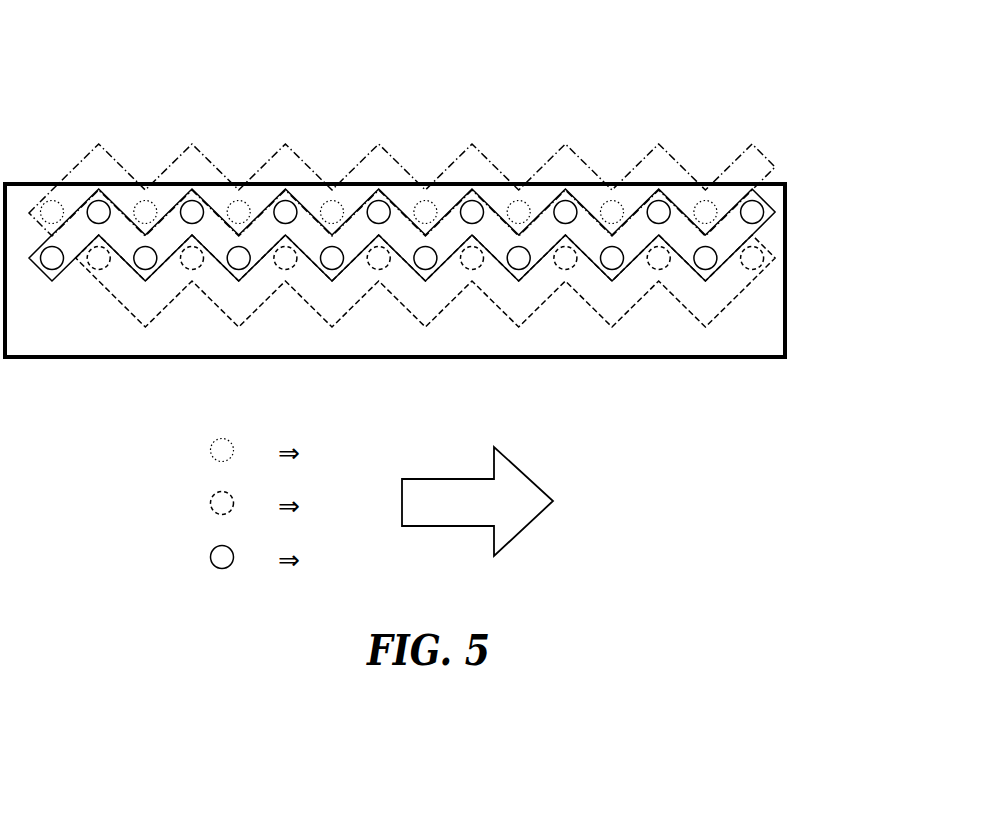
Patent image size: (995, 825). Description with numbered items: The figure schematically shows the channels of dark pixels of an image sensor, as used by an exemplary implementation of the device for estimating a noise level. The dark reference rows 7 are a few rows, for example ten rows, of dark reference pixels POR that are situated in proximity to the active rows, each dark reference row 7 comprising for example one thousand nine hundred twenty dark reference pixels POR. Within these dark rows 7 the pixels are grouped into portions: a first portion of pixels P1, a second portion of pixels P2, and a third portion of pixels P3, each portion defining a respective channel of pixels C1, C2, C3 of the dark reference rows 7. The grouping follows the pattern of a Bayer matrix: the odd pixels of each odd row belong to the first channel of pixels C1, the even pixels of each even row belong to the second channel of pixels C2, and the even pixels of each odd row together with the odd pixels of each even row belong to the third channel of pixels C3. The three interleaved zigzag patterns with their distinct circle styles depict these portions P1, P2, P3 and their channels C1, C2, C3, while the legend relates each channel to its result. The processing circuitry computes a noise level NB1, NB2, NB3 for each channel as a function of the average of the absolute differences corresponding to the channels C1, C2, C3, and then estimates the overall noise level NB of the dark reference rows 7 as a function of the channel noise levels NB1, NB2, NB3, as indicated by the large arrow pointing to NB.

The dark reference row 7 is at (749, 360).
The dark reference pixel POR is at (392, 343).
The first portion of pixels P1 is at (88, 150).
The second portion of pixels P2 is at (772, 251).
The third portion of pixels P3 is at (772, 204).
The first channel of pixels C1 is at (379, 335).
The second channel of pixels C2 is at (425, 384).
The third channel of pixels C3 is at (402, 388).
The noise level of the first channel of pixels NB1 is at (336, 453).
The noise level of the second channel of pixels NB2 is at (336, 506).
The noise level of the third channel of pixels NB3 is at (336, 560).
The noise level NB is at (502, 501).